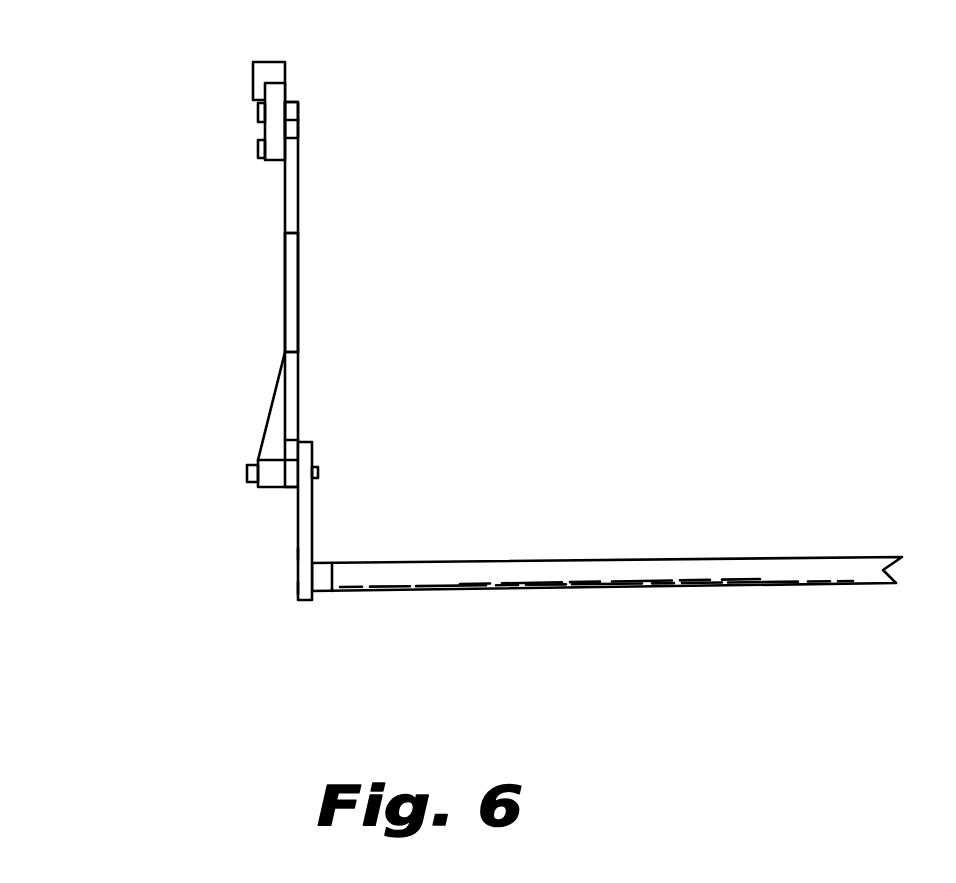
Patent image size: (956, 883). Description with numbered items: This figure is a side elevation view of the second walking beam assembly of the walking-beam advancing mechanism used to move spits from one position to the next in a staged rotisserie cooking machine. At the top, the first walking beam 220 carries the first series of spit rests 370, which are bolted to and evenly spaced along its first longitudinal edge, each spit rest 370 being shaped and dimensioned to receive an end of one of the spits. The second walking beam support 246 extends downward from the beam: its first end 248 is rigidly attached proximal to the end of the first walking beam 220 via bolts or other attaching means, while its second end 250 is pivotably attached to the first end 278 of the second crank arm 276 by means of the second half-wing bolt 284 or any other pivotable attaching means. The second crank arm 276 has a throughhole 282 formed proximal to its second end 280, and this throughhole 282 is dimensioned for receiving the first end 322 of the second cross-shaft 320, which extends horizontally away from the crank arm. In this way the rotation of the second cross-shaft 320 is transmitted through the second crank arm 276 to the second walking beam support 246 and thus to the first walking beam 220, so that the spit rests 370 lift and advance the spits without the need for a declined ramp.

The first series of spit rests 370 is at (253, 77).
The first walking beam 220 is at (265, 128).
The first end of second walking beam support 248 is at (298, 158).
The second walking beam support 246 is at (285, 257).
The second end of second walking beam support 250 is at (298, 333).
The second half-wing bolt 284 is at (247, 472).
The first end of second crank arm 278 is at (312, 452).
The throughhole 282 is at (313, 482).
The second crank arm 276 is at (300, 554).
The second end of second crank arm 280 is at (299, 586).
The second cross-shaft 320 is at (522, 562).
The first end of second cross-shaft 322 is at (343, 593).